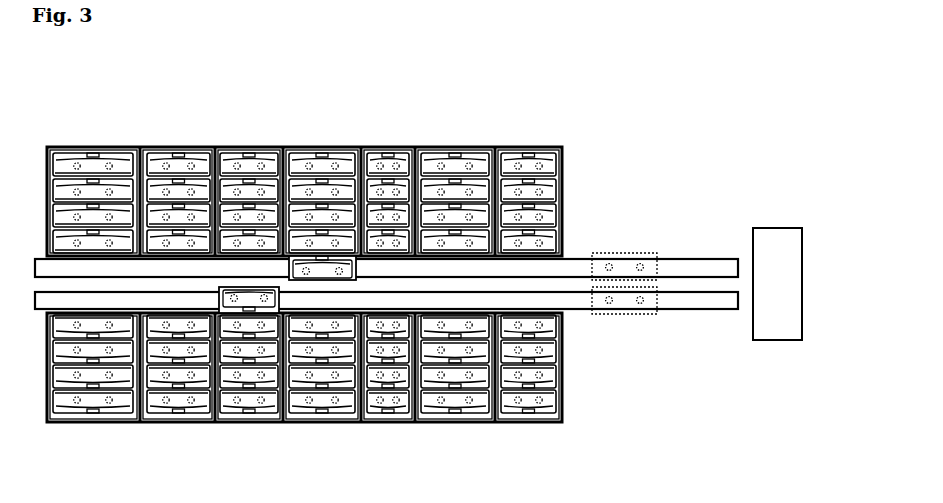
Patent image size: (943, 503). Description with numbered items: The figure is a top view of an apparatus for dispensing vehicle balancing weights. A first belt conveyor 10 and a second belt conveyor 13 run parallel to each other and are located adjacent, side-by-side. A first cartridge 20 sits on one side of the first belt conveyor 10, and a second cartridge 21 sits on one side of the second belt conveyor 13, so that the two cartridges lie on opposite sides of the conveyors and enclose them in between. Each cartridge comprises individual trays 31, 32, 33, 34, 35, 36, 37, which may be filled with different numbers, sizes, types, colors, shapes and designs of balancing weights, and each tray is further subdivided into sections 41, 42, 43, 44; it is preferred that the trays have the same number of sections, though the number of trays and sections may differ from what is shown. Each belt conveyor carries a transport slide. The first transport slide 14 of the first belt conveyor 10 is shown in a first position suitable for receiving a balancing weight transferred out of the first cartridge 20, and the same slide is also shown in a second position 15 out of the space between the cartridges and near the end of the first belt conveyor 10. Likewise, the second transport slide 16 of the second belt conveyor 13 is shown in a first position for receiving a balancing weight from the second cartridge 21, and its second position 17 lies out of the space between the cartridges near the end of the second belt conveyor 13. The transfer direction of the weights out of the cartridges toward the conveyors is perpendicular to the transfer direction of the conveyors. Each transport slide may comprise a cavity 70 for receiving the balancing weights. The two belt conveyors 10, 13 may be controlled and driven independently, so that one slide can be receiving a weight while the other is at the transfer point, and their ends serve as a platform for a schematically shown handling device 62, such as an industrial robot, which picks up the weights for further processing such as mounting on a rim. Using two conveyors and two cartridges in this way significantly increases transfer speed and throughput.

The first belt conveyor 10 is at (712, 266).
The second belt conveyor 13 is at (712, 300).
The first transport slide 14 is at (355, 281).
The second position of the first transport slide 15 is at (655, 252).
The second transport slide 16 is at (278, 313).
The second position of the second transport slide 17 is at (655, 314).
The first cartridge 20 is at (590, 133).
The second cartridge 21 is at (596, 420).
The tray 31 is at (567, 236).
The tray 32 is at (450, 121).
The tray 33 is at (383, 121).
The tray 34 is at (317, 121).
The tray 35 is at (230, 121).
The tray 36 is at (170, 121).
The tray 37 is at (100, 121).
The section 41 is at (562, 238).
The section 42 is at (562, 213).
The section 43 is at (562, 188).
The section 44 is at (562, 163).
The handling device 62 is at (778, 240).
The cavity 70 is at (290, 270).